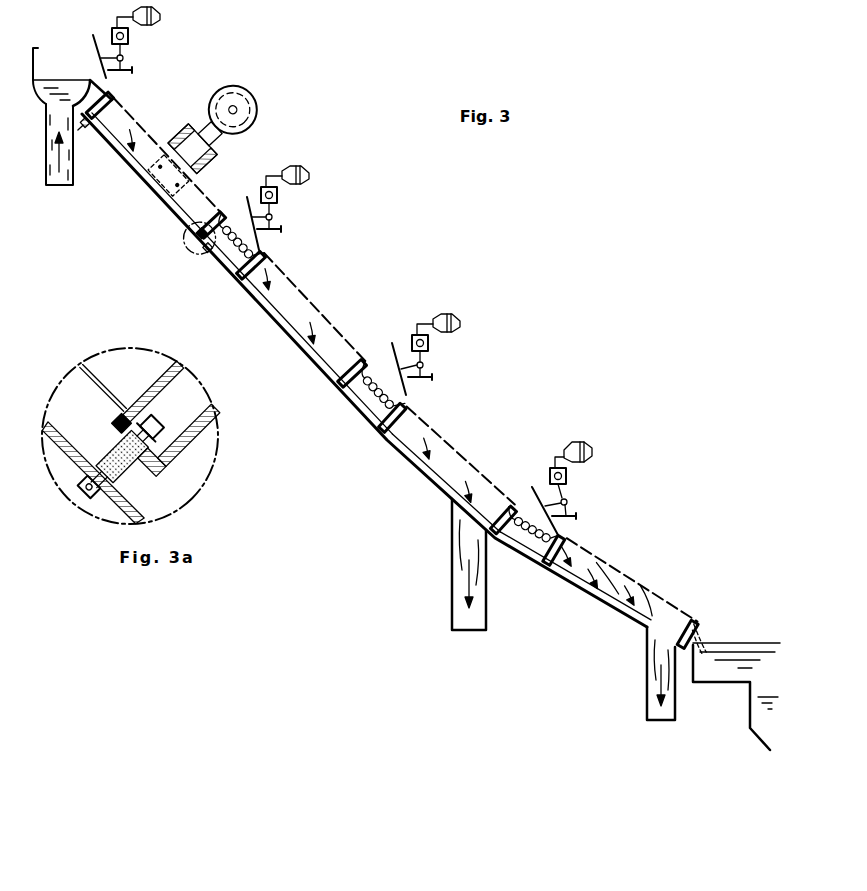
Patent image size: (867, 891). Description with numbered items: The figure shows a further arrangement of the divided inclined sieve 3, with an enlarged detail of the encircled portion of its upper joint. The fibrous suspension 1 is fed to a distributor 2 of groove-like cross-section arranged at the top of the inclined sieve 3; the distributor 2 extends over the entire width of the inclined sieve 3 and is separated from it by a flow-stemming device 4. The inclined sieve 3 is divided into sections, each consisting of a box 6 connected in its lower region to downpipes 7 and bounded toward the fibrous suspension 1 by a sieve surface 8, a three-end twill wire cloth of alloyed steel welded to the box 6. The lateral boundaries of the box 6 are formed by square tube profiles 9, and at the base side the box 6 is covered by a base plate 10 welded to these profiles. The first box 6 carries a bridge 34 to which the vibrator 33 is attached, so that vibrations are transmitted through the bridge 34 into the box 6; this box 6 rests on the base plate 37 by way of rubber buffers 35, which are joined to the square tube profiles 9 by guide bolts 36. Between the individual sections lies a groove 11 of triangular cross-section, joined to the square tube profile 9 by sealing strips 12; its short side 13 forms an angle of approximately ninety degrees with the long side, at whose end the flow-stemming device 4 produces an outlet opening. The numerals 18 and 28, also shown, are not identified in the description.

In FIG. 3, the fibrous suspension 1 is at (134, 113).
In FIG. 3, the distributor 2 is at (46, 78).
In FIG. 3, the inclined sieve 3 is at (402, 266).
In FIG. 3, the flow-stemming device 4 is at (142, 41).
In FIG. 3, the box 6 is at (127, 160).
In FIG. 3, the downpipes 7 is at (450, 620).
In FIG. 3, the sieve surface 8 is at (147, 131).
In FIG. 3, the square tube profiles 9 is at (212, 212).
In FIG. 3A, the square tube profiles 9 is at (190, 375).
In FIG. 3, the base plate 10 is at (148, 178).
In FIG. 3A, the base plate 10 is at (122, 405).
In FIG. 3, the groove 11 is at (377, 403).
In FIG. 3A, the sealing strips 12 is at (112, 421).
In FIG. 3A, the short side 13 is at (220, 440).
In FIG. 3, the support rod 18 is at (97, 44).
In FIG. 3, the connector 28 is at (457, 318).
In FIG. 3, the vibrator 33 is at (238, 88).
In FIG. 3, the bridge 34 is at (192, 132).
In FIG. 3, the rubber buffers 35 is at (88, 130).
In FIG. 3A, the rubber buffers 35 is at (146, 492).
In FIG. 3, the guide bolts 36 is at (190, 246).
In FIG. 3A, the guide bolts 36 is at (160, 430).
In FIG. 3, the base plate 37 is at (268, 318).
In FIG. 3A, the base plate 37 is at (128, 532).